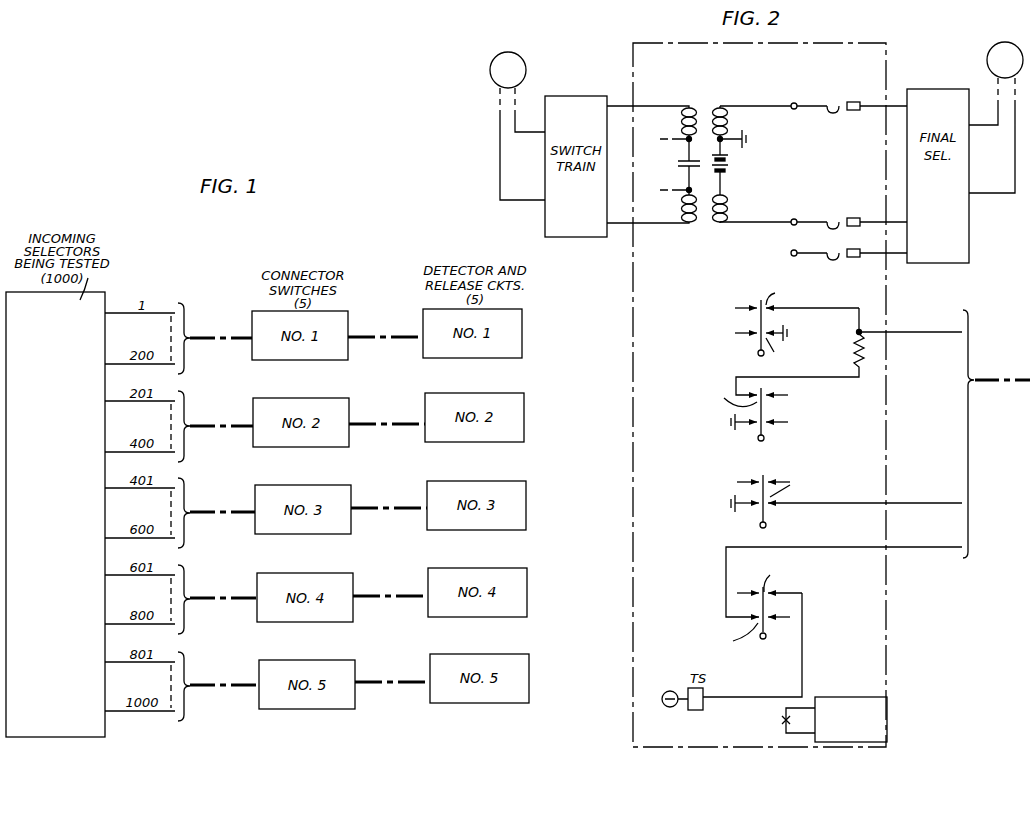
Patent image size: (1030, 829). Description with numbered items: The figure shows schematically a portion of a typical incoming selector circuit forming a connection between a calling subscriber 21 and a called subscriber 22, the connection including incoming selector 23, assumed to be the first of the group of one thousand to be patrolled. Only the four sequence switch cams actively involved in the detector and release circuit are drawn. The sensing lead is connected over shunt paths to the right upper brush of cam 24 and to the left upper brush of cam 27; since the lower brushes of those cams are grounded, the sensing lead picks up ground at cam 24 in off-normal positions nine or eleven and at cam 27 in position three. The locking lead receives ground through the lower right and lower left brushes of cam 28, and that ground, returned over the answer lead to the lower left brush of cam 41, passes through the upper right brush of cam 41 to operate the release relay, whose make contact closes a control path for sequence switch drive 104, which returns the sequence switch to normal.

The calling subscriber 21 is at (490, 70).
The called subscriber 22 is at (987, 60).
The incoming selector 23 is at (886, 45).
The cam 24 is at (758, 353).
The cam 27 is at (765, 439).
The cam 28 is at (768, 525).
The cam 41 is at (765, 640).
The sequence switch drive 104 is at (852, 697).